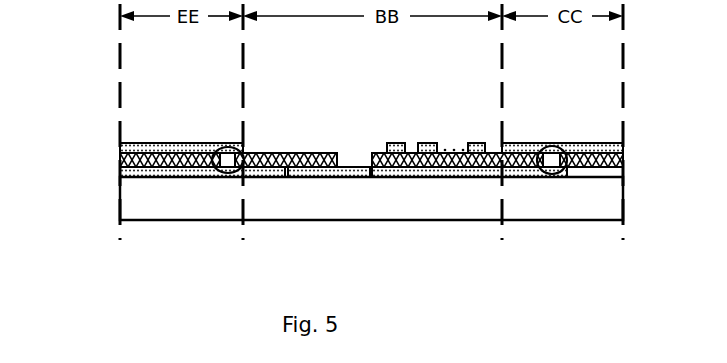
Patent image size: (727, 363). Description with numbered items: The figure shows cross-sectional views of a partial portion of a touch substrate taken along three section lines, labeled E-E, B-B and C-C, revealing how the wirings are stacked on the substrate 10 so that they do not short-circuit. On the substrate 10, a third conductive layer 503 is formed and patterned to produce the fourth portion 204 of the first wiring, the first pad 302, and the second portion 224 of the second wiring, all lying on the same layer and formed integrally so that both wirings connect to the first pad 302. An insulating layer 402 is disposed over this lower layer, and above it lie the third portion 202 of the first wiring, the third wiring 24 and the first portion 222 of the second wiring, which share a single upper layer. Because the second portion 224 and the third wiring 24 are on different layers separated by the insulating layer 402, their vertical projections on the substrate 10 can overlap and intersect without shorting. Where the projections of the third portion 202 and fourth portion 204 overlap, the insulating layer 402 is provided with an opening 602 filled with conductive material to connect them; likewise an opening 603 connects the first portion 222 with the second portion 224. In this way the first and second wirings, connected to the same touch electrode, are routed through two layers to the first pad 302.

The substrate 10 is at (106, 204).
The third wiring 24 is at (477, 133).
The third portion of the first wiring 202 is at (178, 143).
The fourth portion of the first wiring 204 is at (267, 178).
The first portion of the second wiring 222 is at (585, 143).
The second portion of the second wiring 224 is at (533, 178).
The first pad 302 is at (325, 178).
The third conductive layer 503 is at (347, 220).
The insulating layer 402 is at (106, 160).
The opening 602 is at (225, 147).
The opening 603 is at (548, 146).